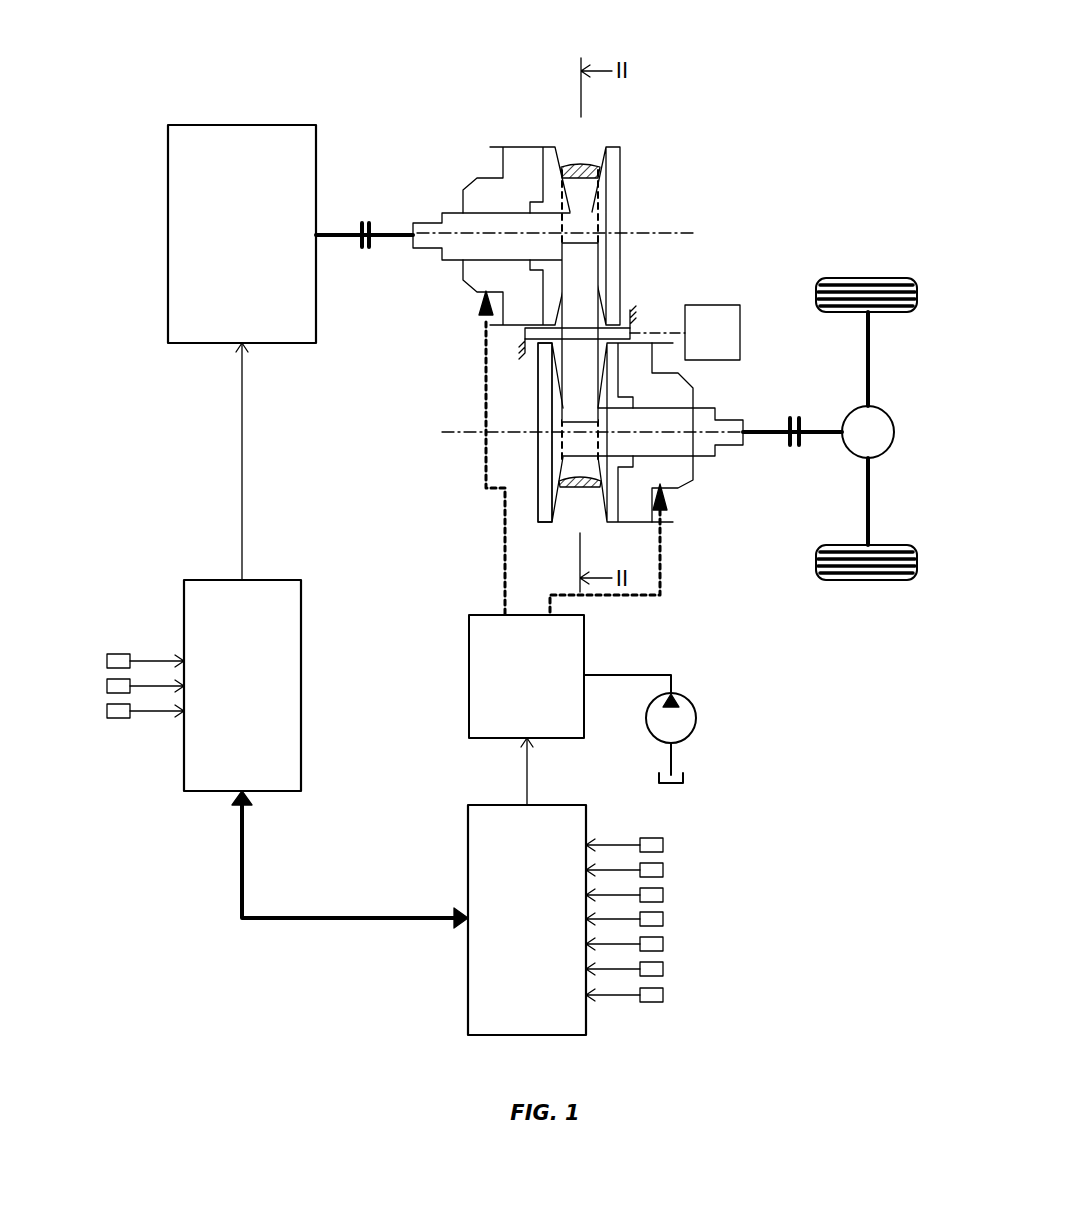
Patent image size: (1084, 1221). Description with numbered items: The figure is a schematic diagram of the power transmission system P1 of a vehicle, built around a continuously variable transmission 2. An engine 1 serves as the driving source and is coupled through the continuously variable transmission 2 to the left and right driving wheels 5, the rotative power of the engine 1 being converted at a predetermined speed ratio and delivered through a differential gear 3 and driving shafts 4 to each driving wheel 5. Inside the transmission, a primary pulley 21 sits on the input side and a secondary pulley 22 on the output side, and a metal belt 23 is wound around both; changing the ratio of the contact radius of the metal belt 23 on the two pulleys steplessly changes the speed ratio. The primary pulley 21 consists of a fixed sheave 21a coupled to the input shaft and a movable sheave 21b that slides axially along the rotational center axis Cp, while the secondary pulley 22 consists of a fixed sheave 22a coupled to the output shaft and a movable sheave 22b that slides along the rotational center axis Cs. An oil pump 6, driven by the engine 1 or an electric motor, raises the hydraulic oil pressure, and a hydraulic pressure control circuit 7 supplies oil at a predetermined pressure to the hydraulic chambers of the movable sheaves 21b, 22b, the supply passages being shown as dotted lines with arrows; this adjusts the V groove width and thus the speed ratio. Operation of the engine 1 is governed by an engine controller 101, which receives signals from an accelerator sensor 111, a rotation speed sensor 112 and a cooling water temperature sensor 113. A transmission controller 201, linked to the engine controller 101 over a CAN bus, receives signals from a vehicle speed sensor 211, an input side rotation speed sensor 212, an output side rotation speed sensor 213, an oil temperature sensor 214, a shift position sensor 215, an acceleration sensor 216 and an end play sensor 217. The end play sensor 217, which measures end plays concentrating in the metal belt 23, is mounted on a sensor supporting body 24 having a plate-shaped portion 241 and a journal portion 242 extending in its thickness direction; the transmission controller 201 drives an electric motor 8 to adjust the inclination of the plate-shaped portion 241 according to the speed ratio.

The engine 1 is at (246, 125).
The continuously variable transmission 2 is at (470, 88).
The differential gear 3 is at (895, 432).
The driving shaft 4 is at (870, 365).
The driving wheel 5 is at (919, 290).
The oil pump 6 is at (697, 720).
The hydraulic pressure control circuit 7 is at (469, 676).
The electric motor 8 is at (712, 305).
The primary pulley 21 is at (551, 207).
The fixed sheave 21a is at (615, 147).
The movable sheave 21b is at (545, 147).
The secondary pulley 22 is at (620, 464).
The fixed sheave 22a is at (541, 523).
The movable sheave 22b is at (614, 523).
The metal belt 23 is at (592, 165).
The sensor supporting body 24 is at (600, 258).
The plate-shaped portion 241 is at (582, 310).
The journal portion 242 is at (540, 338).
The engine controller 101 is at (284, 580).
The accelerator sensor 111 is at (107, 663).
The rotation speed sensor 112 is at (107, 688).
The cooling water temperature sensor 113 is at (107, 713).
The transmission controller 201 is at (571, 805).
The vehicle speed sensor 211 is at (663, 845).
The input side rotation speed sensor 212 is at (663, 870).
The output side rotation speed sensor 213 is at (663, 895).
The oil temperature sensor 214 is at (663, 919).
The shift position sensor 215 is at (663, 944).
The acceleration sensor 216 is at (663, 969).
The end play sensor 217 is at (663, 995).
The rotational center axis Cp is at (686, 233).
The rotational center axis Cs is at (458, 432).
The power transmission system P1 is at (785, 115).